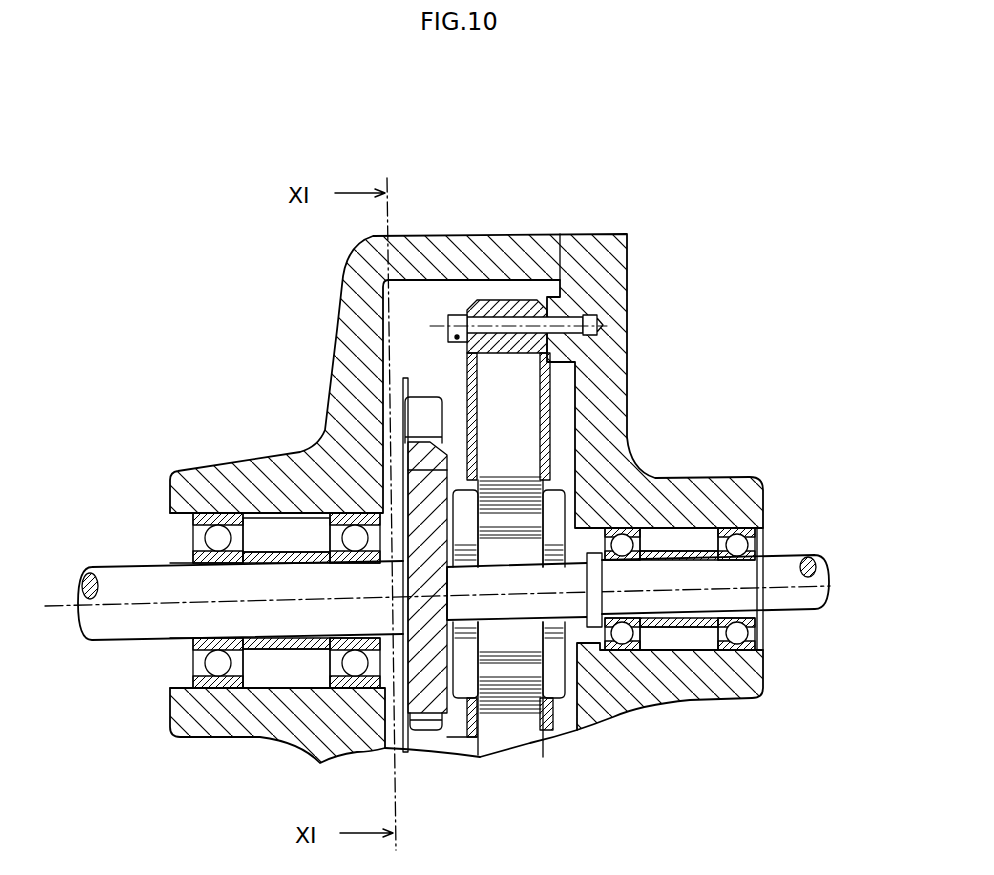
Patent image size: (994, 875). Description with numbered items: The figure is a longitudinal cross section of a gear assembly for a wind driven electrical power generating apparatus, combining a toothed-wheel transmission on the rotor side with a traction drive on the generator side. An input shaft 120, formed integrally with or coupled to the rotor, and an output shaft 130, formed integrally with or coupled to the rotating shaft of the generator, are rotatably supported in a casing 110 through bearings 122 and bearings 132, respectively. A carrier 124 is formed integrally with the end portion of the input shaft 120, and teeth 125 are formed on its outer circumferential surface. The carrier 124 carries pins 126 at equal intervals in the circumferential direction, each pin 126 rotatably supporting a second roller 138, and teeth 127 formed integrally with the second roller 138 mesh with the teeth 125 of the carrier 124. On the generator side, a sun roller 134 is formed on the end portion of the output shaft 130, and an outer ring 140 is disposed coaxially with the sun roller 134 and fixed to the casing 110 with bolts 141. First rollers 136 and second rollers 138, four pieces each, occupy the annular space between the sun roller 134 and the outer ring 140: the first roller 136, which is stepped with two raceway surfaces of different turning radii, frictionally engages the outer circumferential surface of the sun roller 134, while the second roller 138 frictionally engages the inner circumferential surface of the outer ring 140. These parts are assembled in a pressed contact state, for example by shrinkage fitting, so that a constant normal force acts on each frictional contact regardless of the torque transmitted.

The casing 110 is at (505, 240).
The input shaft 120 is at (112, 577).
The bearings 122 is at (178, 545).
The carrier 124 is at (385, 700).
The teeth 125 is at (400, 458).
The pins 126 is at (455, 430).
The teeth 127 is at (420, 397).
The output shaft 130 is at (780, 565).
The bearings 132 is at (778, 637).
The sun roller 134 is at (500, 605).
The first roller 136 is at (560, 680).
The second roller 138 is at (525, 393).
The outer ring 140 is at (540, 300).
The bolts 141 is at (457, 312).